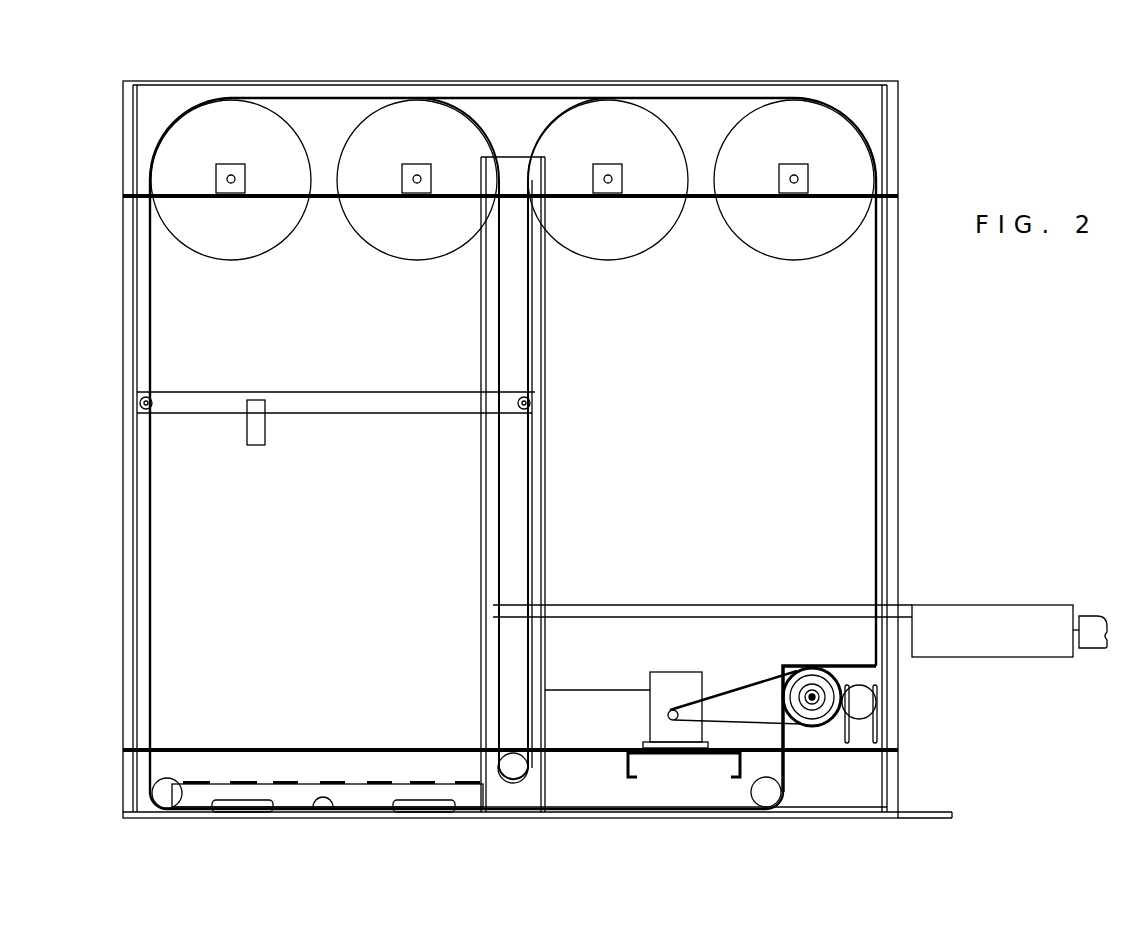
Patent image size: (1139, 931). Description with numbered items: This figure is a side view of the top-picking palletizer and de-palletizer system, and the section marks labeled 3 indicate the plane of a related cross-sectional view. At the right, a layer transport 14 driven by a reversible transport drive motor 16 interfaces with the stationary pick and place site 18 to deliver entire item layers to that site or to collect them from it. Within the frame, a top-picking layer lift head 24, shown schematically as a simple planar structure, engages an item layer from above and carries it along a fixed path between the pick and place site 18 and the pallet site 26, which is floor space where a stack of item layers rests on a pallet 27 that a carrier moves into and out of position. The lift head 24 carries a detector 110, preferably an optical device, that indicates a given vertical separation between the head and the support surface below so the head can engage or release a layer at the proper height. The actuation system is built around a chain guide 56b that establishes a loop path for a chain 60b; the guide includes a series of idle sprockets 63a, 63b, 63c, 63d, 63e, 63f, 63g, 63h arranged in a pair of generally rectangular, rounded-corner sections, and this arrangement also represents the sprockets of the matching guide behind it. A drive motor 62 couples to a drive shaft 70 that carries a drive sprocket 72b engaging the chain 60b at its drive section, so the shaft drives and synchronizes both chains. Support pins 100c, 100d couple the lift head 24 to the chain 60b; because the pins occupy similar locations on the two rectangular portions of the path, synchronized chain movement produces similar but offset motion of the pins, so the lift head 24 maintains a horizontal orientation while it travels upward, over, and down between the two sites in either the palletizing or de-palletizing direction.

The section line for FIG. 3 is at (132, 65).
The layer transport 14 is at (975, 604).
The reversible transport drive motor 16 is at (1092, 652).
The stationary pick and place site 18 is at (700, 604).
The top-picking layer lift head 24 is at (336, 386).
The pallet site 26 is at (327, 808).
The pallet 27 is at (290, 781).
The chain guide 56b is at (848, 333).
The chain 60b is at (310, 95).
The drive motor 62 is at (677, 672).
The idle sprocket 63a is at (860, 686).
The idle sprocket 63b is at (777, 261).
The idle sprocket 63c is at (590, 261).
The idle sprocket 63d is at (512, 752).
The idle sprocket 63e is at (396, 261).
The idle sprocket 63f is at (210, 261).
The idle sprocket 63g is at (162, 780).
The idle sprocket 63h is at (752, 795).
The drive shaft 70 is at (811, 694).
The drive sprocket 72b is at (829, 679).
The support pin 100c is at (147, 410).
The support pin 100d is at (520, 408).
The detector 110 is at (266, 430).